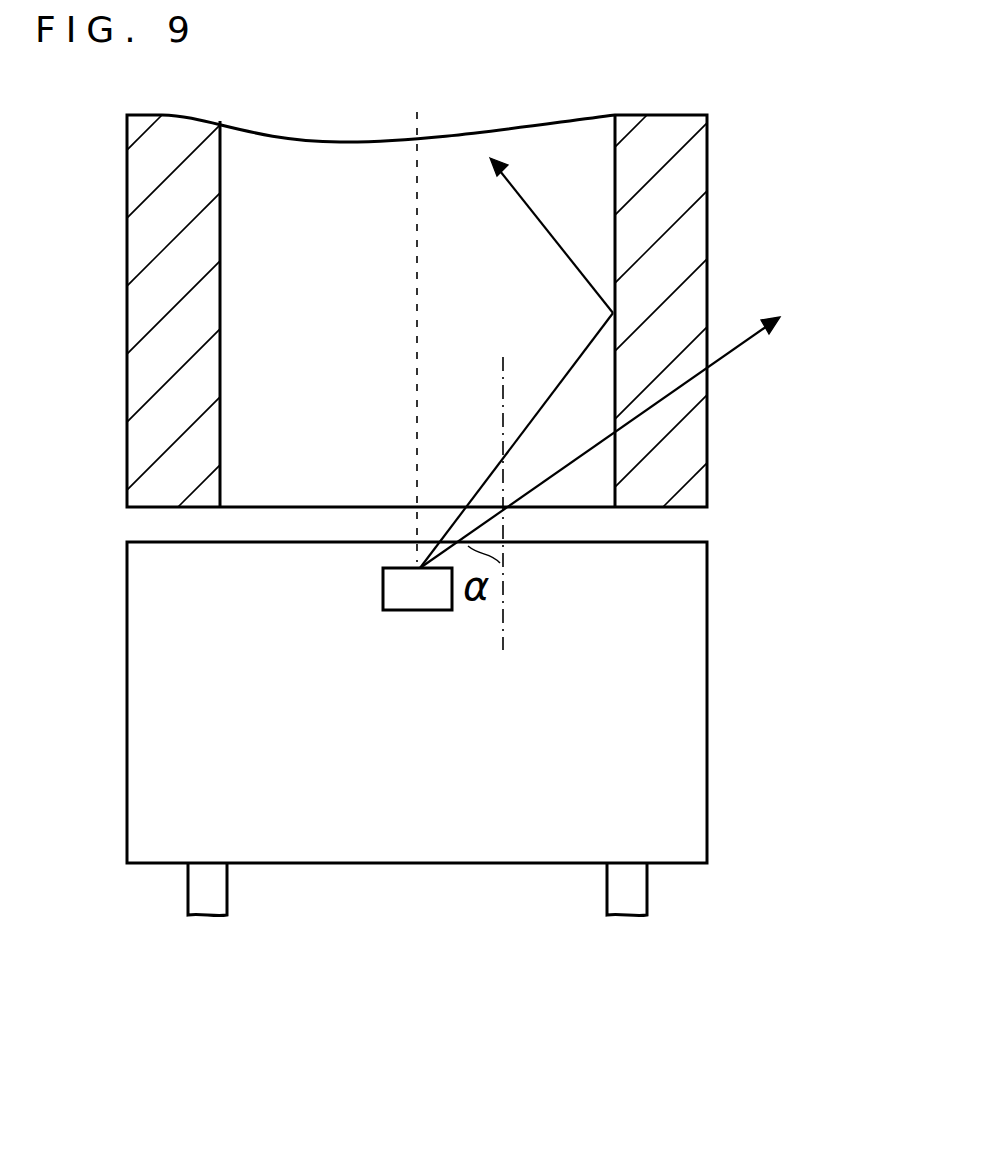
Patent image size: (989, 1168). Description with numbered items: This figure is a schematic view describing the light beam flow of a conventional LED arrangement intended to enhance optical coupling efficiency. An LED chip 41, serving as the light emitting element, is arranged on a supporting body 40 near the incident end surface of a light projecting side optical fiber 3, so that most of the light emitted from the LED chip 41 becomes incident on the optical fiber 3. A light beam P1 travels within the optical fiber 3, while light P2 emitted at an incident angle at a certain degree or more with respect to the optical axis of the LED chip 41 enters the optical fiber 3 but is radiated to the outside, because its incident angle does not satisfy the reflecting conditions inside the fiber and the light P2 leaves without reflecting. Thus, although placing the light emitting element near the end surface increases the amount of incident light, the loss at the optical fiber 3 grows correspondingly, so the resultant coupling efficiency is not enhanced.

The light projecting side optical fiber 3 is at (707, 168).
The base member 40 is at (707, 727).
The LED chip 41 is at (422, 610).
The first light path P1 is at (551, 220).
The light P2 is at (631, 423).